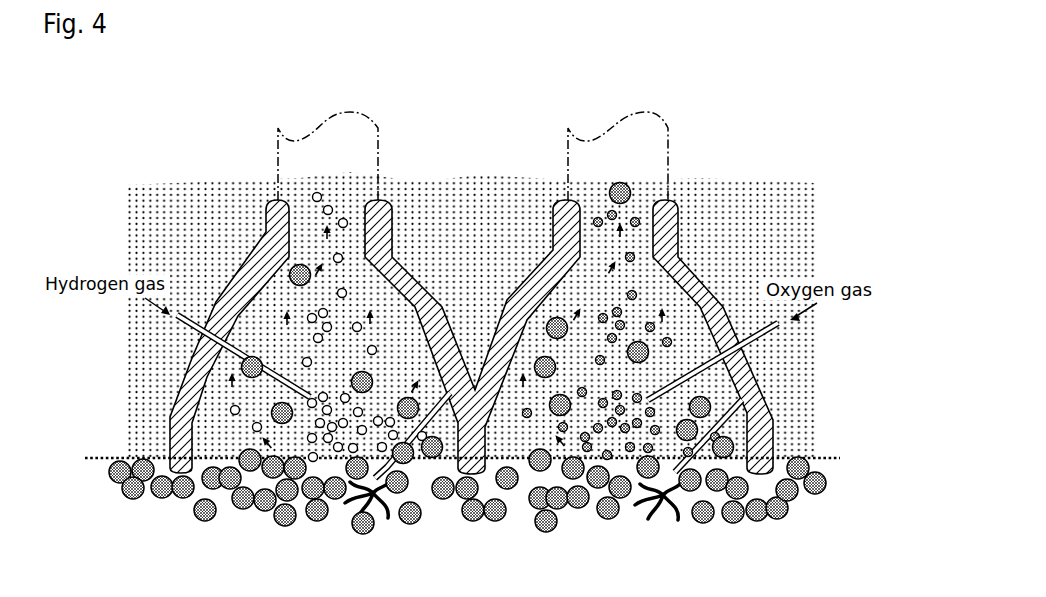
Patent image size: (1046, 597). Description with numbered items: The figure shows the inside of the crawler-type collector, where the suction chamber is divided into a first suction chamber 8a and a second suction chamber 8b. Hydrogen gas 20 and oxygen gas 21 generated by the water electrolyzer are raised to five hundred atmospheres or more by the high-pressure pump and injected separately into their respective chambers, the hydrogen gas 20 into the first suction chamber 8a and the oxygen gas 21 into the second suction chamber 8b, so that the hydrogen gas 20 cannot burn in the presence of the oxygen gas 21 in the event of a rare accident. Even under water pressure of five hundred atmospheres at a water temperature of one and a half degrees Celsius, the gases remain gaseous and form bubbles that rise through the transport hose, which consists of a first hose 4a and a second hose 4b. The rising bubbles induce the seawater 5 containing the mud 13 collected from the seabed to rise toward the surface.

The first hose 4a is at (274, 134).
The second hose 4b is at (557, 134).
The first suction chamber 8a is at (199, 200).
The second suction chamber 8b is at (520, 218).
The mud 13 is at (289, 278).
The seawater 5 is at (217, 440).
The hydrogen gas 20 is at (342, 278).
The oxygen gas 21 is at (665, 282).